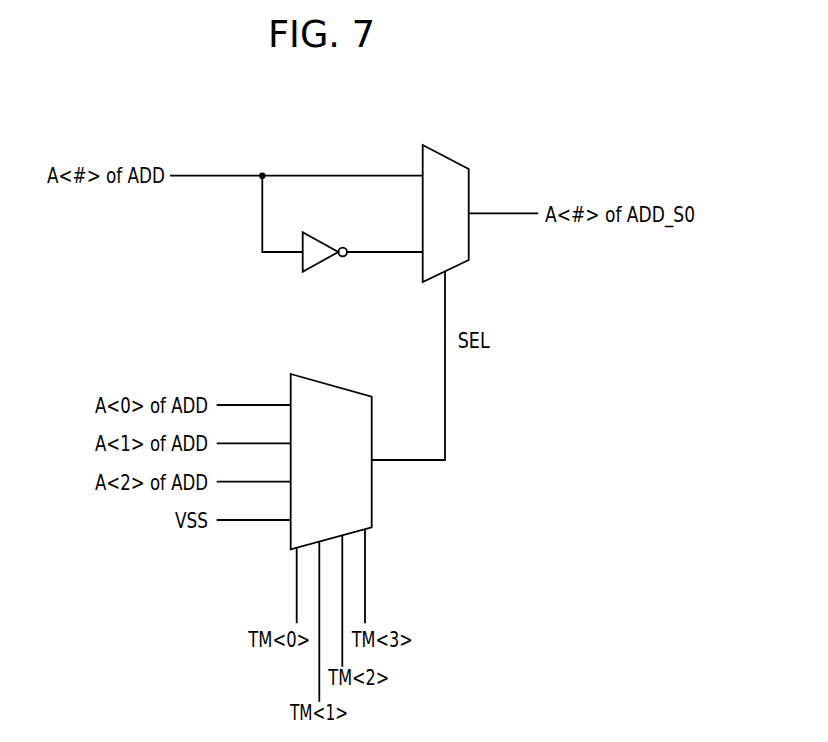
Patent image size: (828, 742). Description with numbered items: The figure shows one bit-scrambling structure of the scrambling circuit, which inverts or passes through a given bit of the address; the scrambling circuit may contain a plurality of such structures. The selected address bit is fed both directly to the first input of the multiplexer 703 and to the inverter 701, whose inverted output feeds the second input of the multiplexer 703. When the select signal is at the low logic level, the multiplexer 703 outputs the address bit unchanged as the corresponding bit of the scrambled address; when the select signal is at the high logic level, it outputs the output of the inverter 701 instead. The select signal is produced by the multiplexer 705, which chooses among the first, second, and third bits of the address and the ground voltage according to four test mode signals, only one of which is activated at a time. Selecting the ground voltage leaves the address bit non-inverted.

The inverter 701 is at (317, 237).
The multiplexer 703 is at (447, 155).
The multiplexer 705 is at (333, 385).